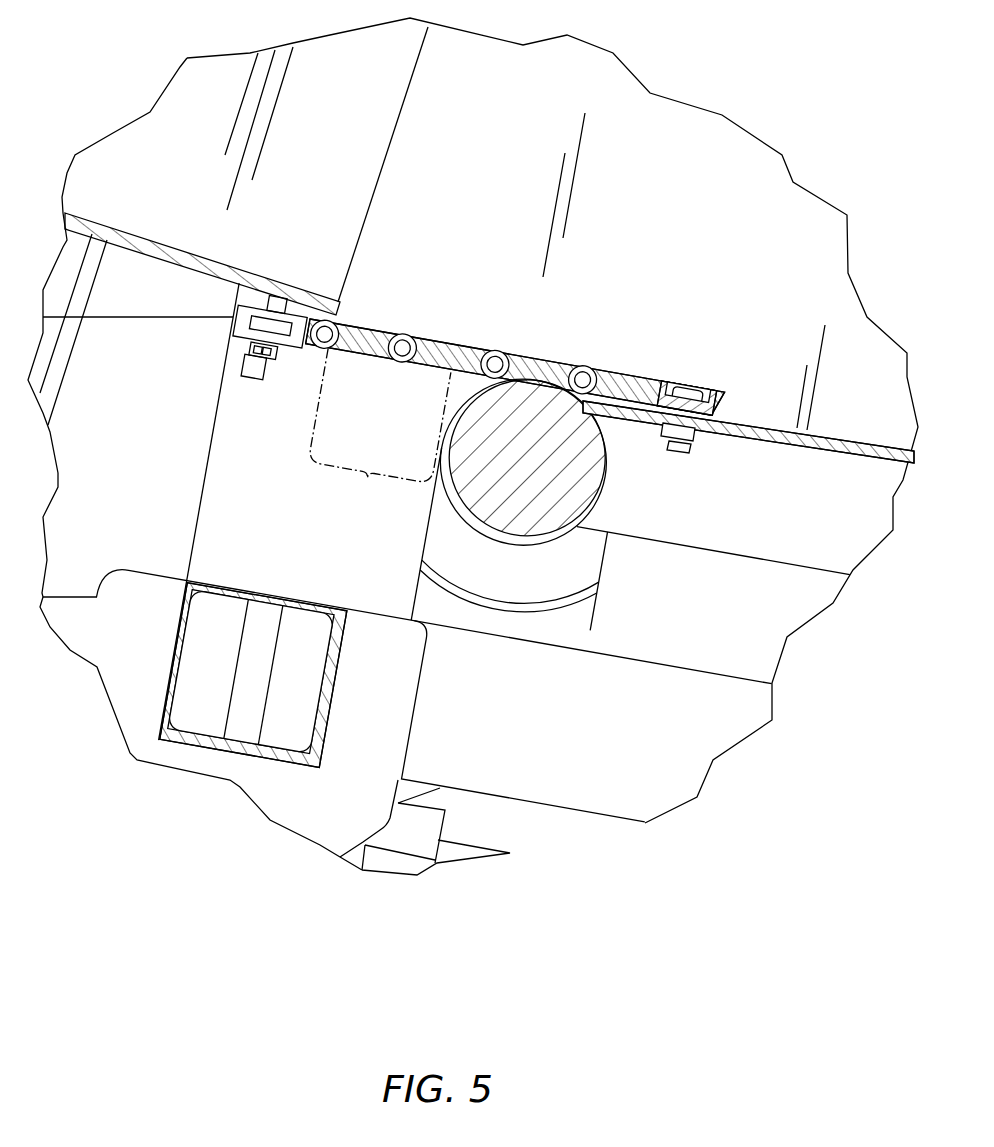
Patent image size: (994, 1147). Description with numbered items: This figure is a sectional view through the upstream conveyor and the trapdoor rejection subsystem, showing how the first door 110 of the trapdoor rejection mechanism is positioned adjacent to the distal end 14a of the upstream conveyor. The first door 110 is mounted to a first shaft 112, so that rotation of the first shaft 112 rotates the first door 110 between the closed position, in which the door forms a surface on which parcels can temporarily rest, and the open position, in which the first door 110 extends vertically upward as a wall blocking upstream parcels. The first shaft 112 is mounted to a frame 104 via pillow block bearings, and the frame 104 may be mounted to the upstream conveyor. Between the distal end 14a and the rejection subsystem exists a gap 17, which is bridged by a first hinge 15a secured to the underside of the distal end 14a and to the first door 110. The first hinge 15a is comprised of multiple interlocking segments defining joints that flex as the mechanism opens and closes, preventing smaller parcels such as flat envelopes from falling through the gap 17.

The distal end of the upstream conveyor 14a is at (377, 189).
The first hinge 15a is at (425, 335).
The first shaft 112 is at (537, 390).
The first door 110 is at (726, 412).
The frame 104 is at (203, 745).
The gap 17 is at (367, 478).